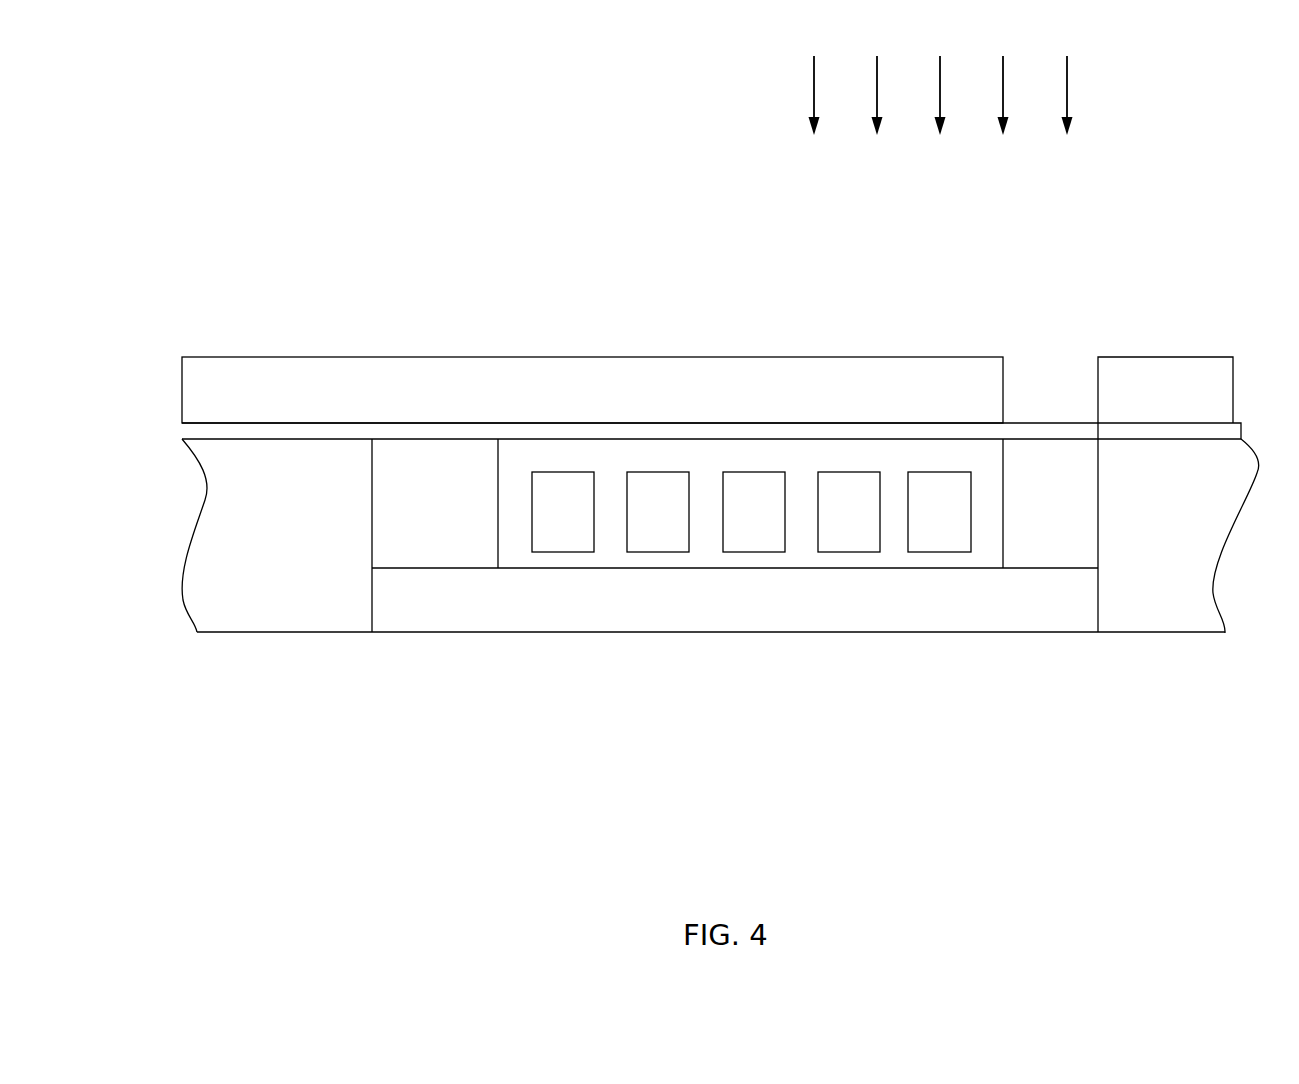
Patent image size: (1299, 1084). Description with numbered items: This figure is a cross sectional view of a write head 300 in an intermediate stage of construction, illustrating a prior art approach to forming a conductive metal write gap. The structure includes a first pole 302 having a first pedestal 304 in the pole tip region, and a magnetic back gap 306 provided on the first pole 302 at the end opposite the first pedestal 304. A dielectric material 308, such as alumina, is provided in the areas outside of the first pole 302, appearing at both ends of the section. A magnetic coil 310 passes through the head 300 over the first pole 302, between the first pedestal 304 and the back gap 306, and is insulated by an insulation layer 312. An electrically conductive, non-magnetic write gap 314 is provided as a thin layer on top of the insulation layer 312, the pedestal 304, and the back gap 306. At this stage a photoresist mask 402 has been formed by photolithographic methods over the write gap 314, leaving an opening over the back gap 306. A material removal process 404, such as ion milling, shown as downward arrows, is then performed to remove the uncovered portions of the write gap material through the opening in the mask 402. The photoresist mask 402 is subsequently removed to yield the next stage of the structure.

The write head 300 is at (697, 491).
The first pole 302 is at (750, 608).
The first pedestal 304 is at (433, 487).
The magnetic back gap 306 is at (1058, 490).
The dielectric material 308 is at (222, 550).
The magnetic coil 310 is at (760, 452).
The insulation layer 312 is at (520, 455).
The write gap 314 is at (593, 430).
The photoresist mask 402 is at (857, 384).
The material removal process 404 is at (813, 87).